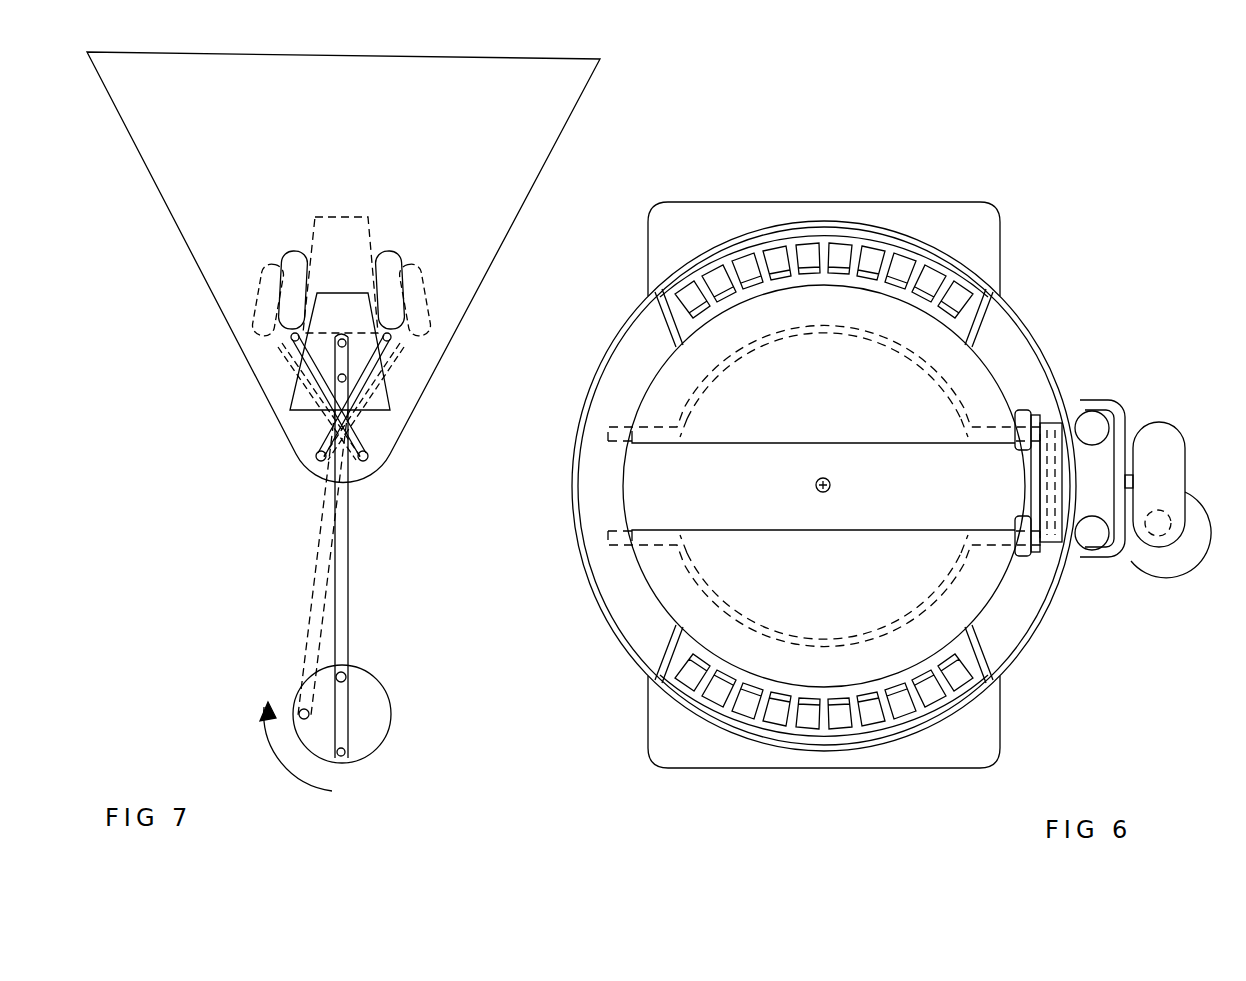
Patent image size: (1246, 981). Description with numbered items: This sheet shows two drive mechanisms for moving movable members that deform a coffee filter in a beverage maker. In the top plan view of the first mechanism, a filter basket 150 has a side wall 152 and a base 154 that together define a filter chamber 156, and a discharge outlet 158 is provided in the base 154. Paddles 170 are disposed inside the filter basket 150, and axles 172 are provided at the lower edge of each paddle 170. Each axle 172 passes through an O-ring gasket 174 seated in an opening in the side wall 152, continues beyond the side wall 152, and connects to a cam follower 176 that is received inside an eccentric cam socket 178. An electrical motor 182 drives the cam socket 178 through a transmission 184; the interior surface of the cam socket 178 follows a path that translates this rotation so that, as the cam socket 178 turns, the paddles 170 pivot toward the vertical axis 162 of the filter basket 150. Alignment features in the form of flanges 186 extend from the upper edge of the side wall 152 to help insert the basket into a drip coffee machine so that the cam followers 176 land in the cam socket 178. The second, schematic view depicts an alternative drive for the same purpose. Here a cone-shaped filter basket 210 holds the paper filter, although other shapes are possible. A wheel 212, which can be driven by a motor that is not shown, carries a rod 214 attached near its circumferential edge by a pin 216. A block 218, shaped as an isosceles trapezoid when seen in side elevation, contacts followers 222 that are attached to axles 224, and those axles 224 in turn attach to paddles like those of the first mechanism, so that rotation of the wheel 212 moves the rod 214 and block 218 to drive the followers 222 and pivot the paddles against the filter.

In FIG. 6, the filter basket 150 is at (872, 474).
In FIG. 6, the side wall 152 is at (1017, 327).
In FIG. 6, the base 154 is at (960, 513).
In FIG. 6, the filter chamber 156 is at (665, 488).
In FIG. 6, the discharge outlet 158 is at (825, 492).
In FIG. 6, the vertical axis 162 is at (826, 478).
In FIG. 6, the paddles 170 is at (685, 378).
In FIG. 6, the axles 172 is at (700, 424).
In FIG. 6, the O-ring gasket 174 is at (1034, 558).
In FIG. 6, the cam follower 176 is at (1090, 542).
In FIG. 6, the eccentric cam socket 178 is at (1106, 402).
In FIG. 6, the electrical motor 182 is at (1152, 562).
In FIG. 6, the transmission 184 is at (1160, 440).
In FIG. 6, the flanges 186 is at (953, 202).
In FIG. 7, the filter basket 210 is at (323, 434).
In FIG. 7, the wheel 212 is at (365, 693).
In FIG. 7, the rod 214 is at (340, 716).
In FIG. 7, the pin 216 is at (342, 765).
In FIG. 7, the block 218 is at (293, 403).
In FIG. 7, the followers 222 is at (277, 300).
In FIG. 7, the axles 224 is at (388, 360).